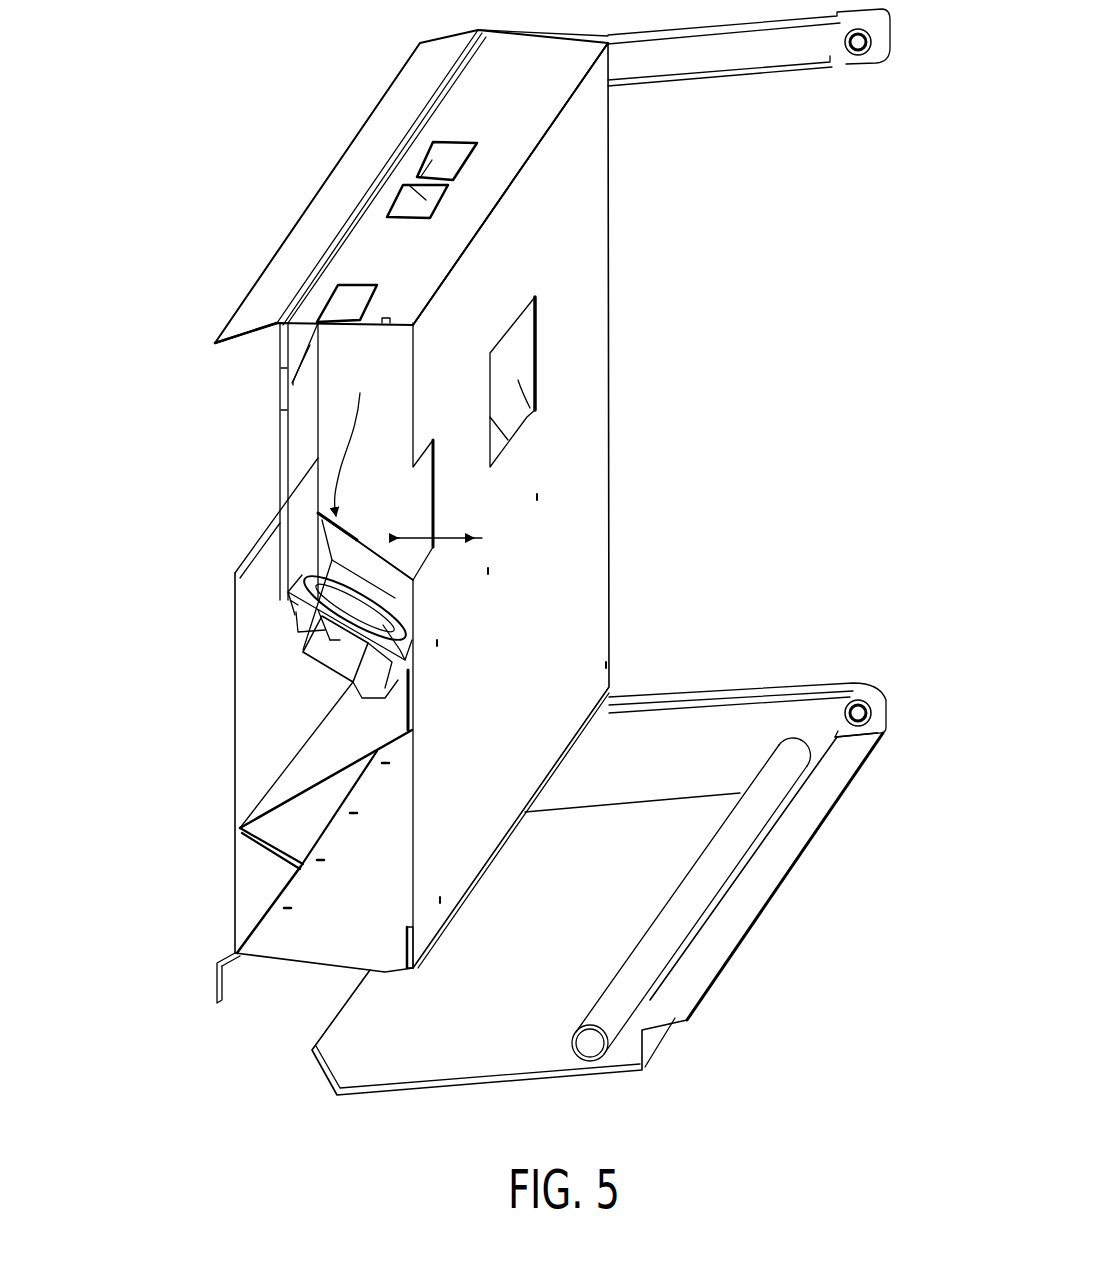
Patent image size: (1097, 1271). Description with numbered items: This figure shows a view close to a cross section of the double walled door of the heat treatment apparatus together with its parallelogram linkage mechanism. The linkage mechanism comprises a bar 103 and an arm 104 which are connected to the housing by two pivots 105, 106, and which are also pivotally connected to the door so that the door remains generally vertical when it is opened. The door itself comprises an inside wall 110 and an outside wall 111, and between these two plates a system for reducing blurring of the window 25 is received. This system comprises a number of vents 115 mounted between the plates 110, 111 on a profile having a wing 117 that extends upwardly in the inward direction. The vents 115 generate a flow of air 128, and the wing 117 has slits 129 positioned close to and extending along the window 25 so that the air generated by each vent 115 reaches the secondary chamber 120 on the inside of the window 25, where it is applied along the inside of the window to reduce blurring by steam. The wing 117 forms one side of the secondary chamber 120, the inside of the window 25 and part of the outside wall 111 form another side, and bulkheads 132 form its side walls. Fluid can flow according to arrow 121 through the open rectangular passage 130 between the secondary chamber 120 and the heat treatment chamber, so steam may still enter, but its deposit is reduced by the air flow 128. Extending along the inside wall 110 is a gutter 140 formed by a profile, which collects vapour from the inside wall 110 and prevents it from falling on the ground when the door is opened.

The window 25 is at (284, 476).
The bar 103 is at (758, 52).
The arm 104 is at (700, 735).
The pivot 105 is at (858, 50).
The pivot 106 is at (858, 703).
The inside wall 110 is at (587, 252).
The outside wall 111 is at (235, 670).
The vent 115 is at (384, 670).
The wing 117 is at (360, 578).
The secondary chamber 120 is at (314, 426).
The arrow 121 is at (438, 545).
The flow of air 128 is at (285, 625).
The slit 129 is at (360, 437).
The rectangular passage 130 is at (530, 363).
The bulkhead 132 is at (518, 380).
The gutter 140 is at (470, 955).